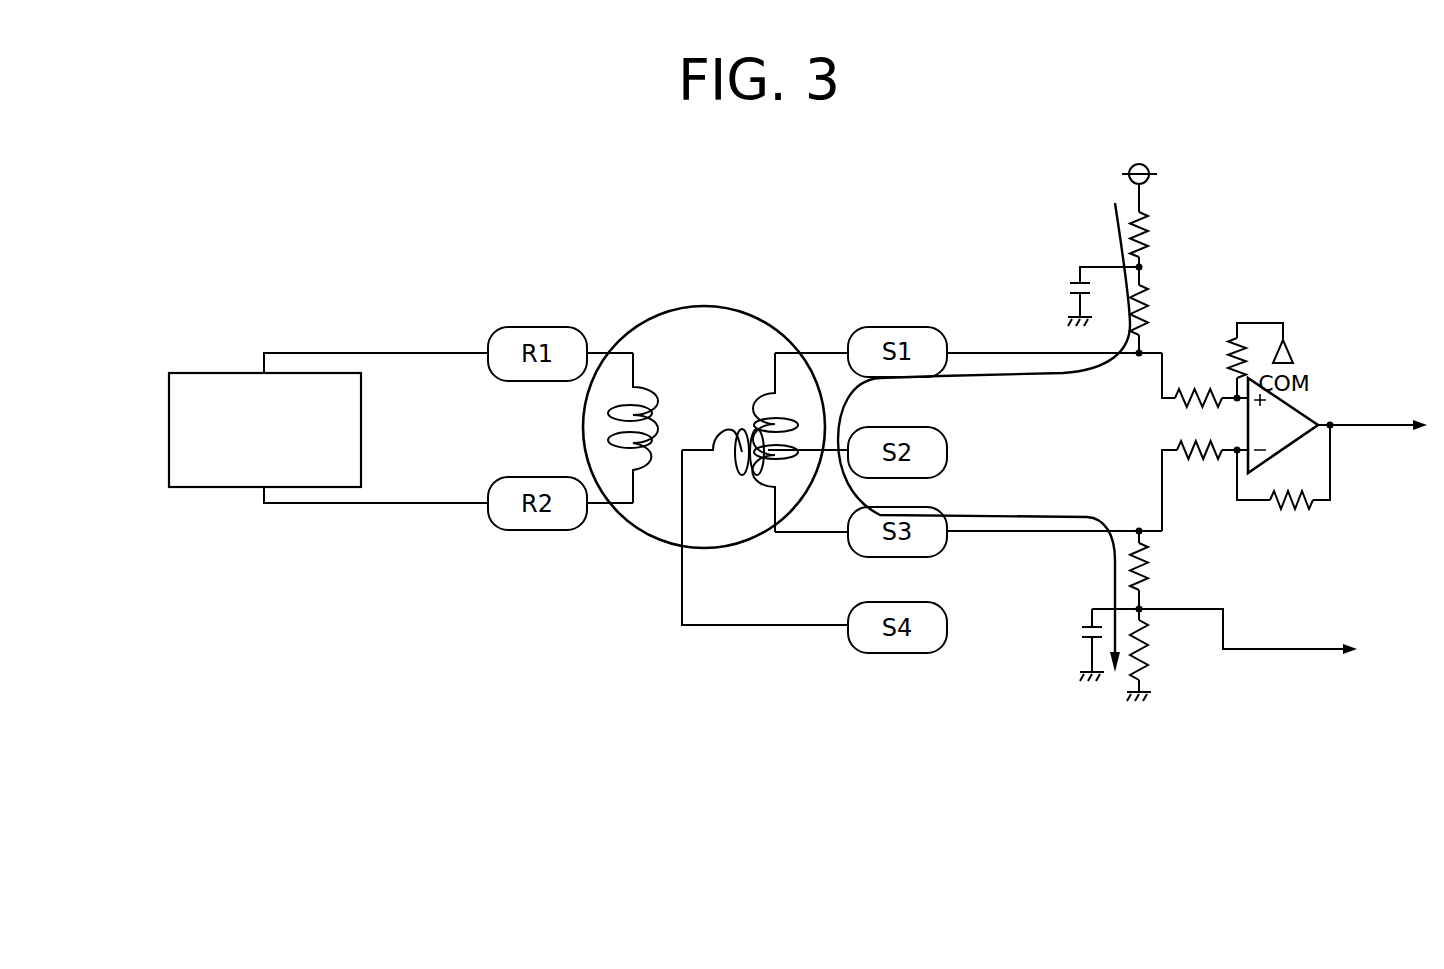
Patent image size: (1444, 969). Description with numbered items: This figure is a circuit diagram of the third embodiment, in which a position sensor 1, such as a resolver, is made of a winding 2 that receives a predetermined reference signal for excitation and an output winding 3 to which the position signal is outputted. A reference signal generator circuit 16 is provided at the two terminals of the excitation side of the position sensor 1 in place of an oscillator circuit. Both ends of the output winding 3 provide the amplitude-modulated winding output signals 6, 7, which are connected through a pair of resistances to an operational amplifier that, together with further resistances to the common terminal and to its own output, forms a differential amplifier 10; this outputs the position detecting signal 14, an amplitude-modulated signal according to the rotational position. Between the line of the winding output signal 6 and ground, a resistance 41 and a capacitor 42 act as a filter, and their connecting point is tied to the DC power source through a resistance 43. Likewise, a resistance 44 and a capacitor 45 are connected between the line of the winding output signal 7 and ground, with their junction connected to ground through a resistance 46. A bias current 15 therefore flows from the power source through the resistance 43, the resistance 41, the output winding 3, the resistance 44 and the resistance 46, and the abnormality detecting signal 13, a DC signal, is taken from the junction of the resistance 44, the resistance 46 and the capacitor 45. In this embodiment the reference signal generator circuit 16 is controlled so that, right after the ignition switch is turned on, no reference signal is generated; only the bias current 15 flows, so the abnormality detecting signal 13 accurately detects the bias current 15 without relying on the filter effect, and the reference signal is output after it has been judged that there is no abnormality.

The position sensor 1 is at (736, 308).
The winding 2 is at (625, 457).
The output winding 3 is at (723, 465).
The winding output signal 6 is at (985, 352).
The winding output signal 7 is at (993, 535).
The differential amplifier 10 is at (1268, 467).
The abnormality detecting signal 13 is at (1283, 653).
The position detecting signal 14 is at (1375, 433).
The bias current 15 is at (1116, 228).
The reference signal generator circuit 16 is at (218, 372).
The resistance 41 is at (1150, 315).
The capacitor 42 is at (1073, 292).
The resistance 43 is at (1150, 237).
The resistance 44 is at (1150, 570).
The capacitor 45 is at (1083, 643).
The resistance 46 is at (1150, 647).